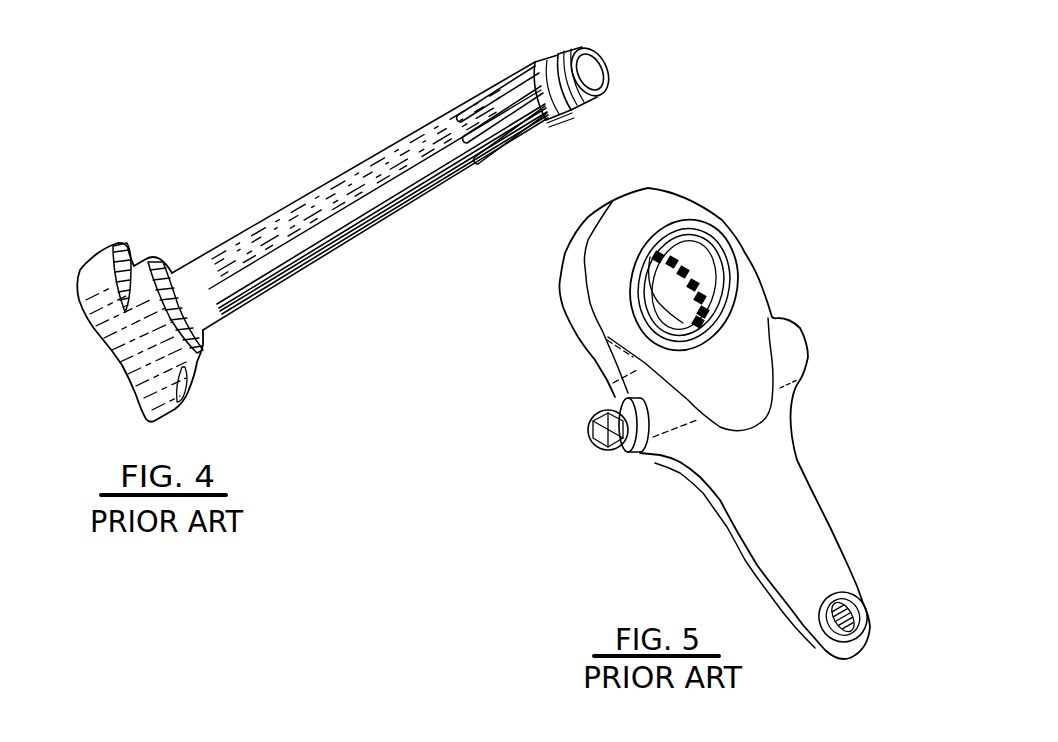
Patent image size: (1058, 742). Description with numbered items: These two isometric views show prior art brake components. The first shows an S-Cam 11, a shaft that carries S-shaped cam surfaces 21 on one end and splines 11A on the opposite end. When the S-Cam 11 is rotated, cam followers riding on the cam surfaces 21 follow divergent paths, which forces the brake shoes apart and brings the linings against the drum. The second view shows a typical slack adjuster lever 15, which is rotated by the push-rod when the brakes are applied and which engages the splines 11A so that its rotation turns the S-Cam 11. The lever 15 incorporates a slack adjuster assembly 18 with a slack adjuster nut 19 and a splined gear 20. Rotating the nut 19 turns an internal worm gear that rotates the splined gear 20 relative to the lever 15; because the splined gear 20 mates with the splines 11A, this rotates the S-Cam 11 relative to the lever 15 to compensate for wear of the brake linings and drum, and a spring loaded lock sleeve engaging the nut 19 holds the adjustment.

In FIG. 4, the S-Cam 11 is at (252, 172).
In FIG. 4, the splines 11A is at (493, 89).
In FIG. 4, the S-shaped cam surfaces 21 is at (101, 282).
In FIG. 5, the slack adjuster lever 15 is at (741, 532).
In FIG. 5, the slack adjuster assembly 18 is at (590, 413).
In FIG. 5, the slack adjuster nut 19 is at (603, 440).
In FIG. 5, the splined gear 20 is at (711, 266).